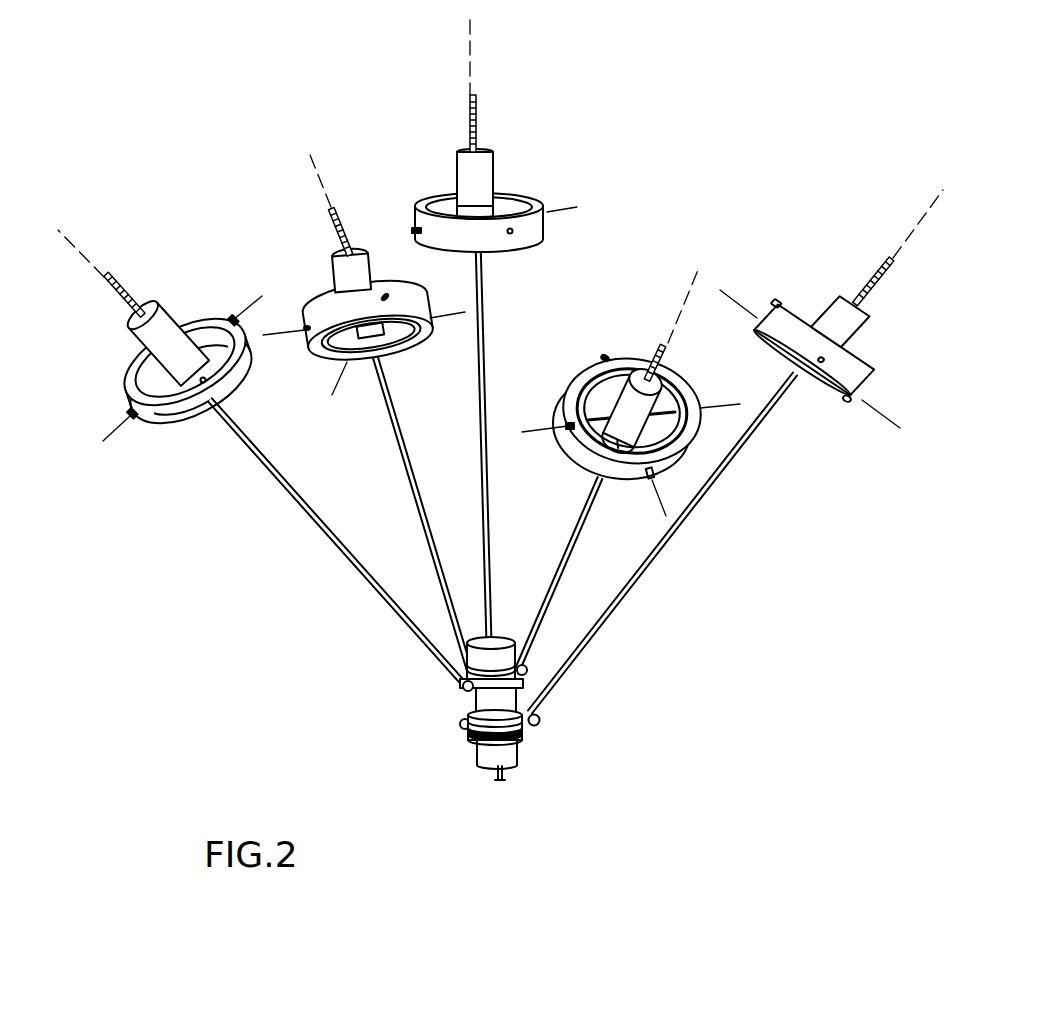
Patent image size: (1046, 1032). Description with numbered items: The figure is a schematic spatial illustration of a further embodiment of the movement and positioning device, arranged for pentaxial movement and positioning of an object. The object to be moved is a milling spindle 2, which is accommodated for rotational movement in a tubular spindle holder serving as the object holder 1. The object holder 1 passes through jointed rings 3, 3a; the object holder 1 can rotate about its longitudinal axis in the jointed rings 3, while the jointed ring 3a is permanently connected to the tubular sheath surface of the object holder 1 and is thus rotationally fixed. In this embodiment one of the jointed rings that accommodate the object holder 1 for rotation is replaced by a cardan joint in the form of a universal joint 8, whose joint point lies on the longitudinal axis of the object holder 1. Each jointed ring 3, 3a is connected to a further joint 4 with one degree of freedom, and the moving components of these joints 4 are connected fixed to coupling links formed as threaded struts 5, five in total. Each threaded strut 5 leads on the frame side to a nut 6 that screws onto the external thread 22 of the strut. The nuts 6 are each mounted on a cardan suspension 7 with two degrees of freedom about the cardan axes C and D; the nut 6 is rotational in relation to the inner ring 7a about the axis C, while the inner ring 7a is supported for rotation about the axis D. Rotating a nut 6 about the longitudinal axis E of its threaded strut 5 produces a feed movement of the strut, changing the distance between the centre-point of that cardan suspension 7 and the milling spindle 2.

The object holder 1 is at (510, 753).
The milling spindle 2 is at (507, 778).
The jointed ring 3 is at (468, 717).
The jointed ring 3a is at (475, 740).
The joint 4 is at (541, 720).
The threaded strut 5 is at (490, 370).
The nut 6 is at (466, 165).
The cardan suspension 7 is at (499, 286).
The inner ring 7a is at (535, 196).
The universal joint 8 is at (495, 632).
The external thread 22 is at (482, 118).
The cardan axis C is at (515, 233).
The cardan axis D is at (577, 207).
The longitudinal axis E is at (478, 82).